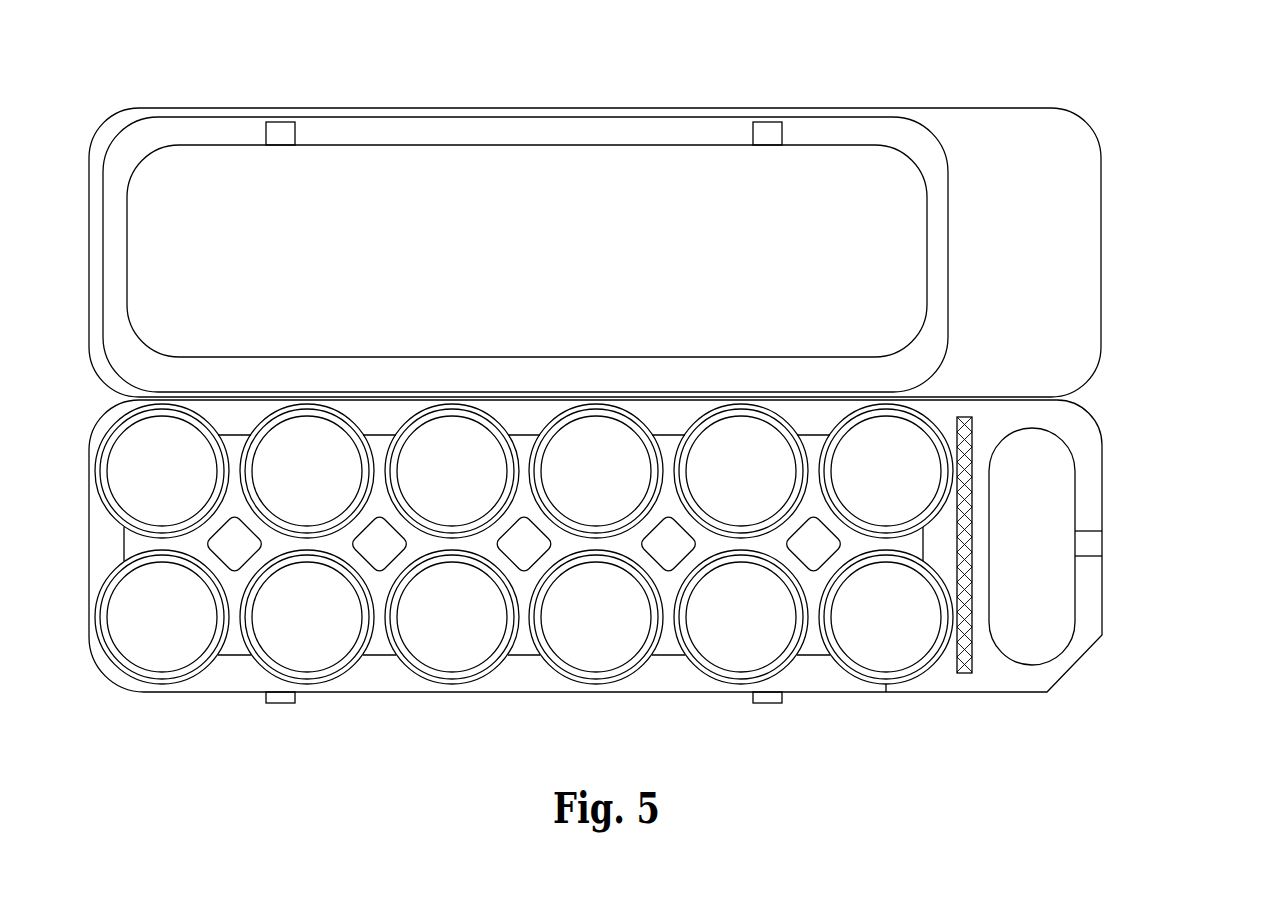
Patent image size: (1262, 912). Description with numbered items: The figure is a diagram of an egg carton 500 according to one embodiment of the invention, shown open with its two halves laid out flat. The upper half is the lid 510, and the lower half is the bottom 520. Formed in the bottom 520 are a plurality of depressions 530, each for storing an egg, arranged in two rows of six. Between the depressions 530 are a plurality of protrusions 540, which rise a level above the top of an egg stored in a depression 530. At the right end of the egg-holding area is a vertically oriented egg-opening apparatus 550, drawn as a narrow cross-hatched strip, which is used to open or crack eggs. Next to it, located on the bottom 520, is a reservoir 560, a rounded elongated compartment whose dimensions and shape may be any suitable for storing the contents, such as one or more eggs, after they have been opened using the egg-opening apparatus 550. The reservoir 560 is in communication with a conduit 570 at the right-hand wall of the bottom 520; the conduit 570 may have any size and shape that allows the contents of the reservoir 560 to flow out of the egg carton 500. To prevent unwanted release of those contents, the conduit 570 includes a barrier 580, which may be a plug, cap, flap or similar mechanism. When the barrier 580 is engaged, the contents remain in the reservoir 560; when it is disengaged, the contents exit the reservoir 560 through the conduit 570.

The egg carton 500 is at (1203, 112).
The lid 510 is at (1078, 120).
The bottom 520 is at (1083, 656).
The depression 530 is at (125, 465).
The protrusion 540 is at (378, 574).
The egg-opening apparatus 550 is at (956, 661).
The reservoir 560 is at (1032, 643).
The conduit 570 is at (1102, 549).
The barrier 580 is at (1102, 540).